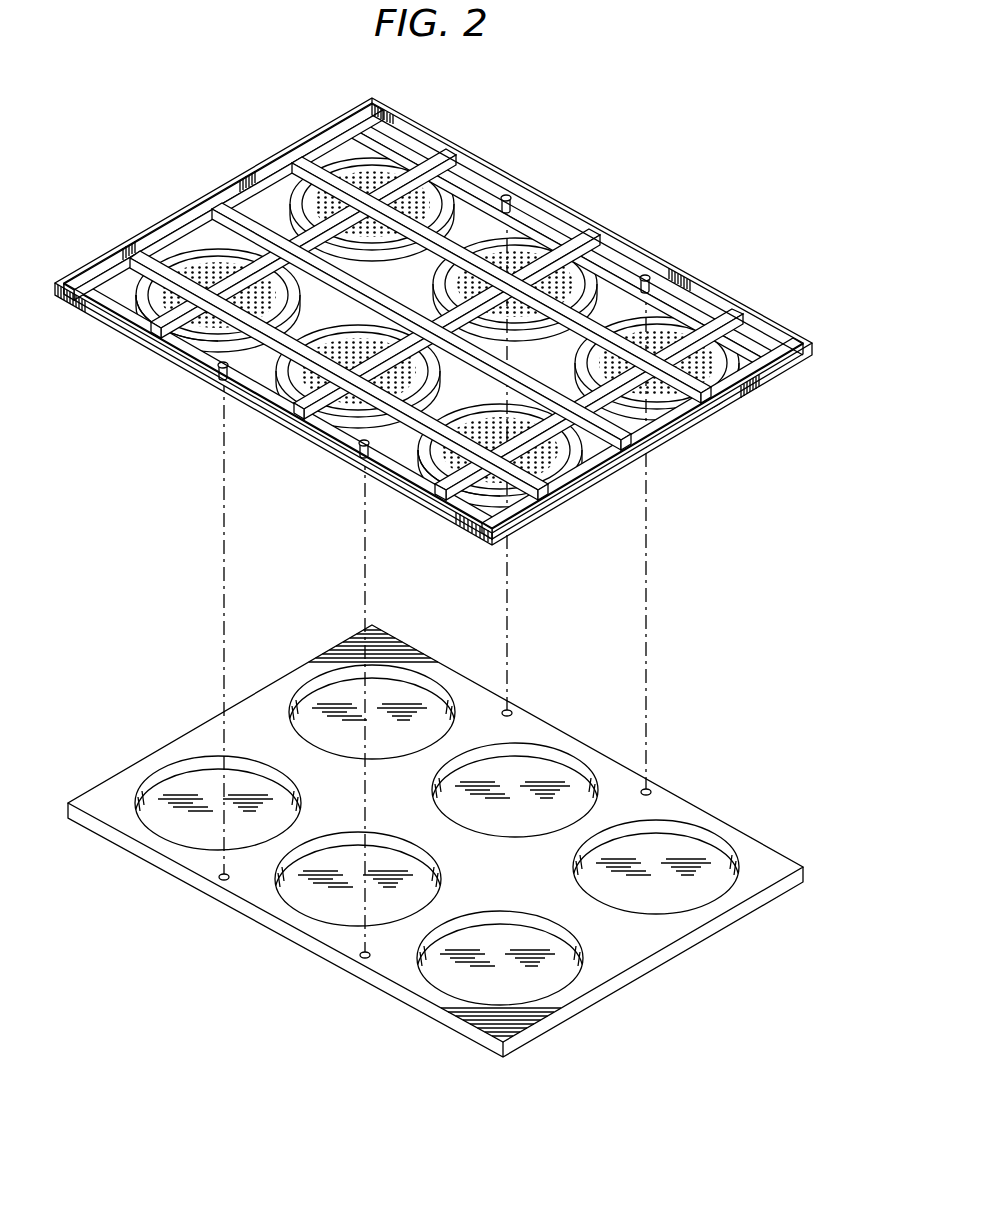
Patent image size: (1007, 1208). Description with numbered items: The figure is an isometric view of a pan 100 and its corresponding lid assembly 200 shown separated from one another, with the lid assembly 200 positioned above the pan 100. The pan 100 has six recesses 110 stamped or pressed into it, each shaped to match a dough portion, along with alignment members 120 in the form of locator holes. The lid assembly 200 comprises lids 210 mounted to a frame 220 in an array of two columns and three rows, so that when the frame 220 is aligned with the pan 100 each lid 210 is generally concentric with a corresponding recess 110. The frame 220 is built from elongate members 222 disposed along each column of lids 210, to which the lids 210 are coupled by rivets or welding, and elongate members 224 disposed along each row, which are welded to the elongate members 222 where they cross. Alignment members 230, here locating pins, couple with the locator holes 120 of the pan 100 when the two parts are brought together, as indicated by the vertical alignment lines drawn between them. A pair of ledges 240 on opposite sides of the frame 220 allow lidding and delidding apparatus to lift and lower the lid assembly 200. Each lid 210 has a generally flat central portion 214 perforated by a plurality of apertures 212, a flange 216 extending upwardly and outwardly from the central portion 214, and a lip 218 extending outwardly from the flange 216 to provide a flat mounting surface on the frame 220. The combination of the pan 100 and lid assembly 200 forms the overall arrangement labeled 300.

The pan 100 is at (435, 841).
The recesses 110 is at (388, 733).
The alignment members 120 is at (512, 709).
The lid assembly 200 is at (433, 308).
The lids 210 is at (433, 313).
The apertures 212 is at (212, 265).
The central portion 214 is at (207, 322).
The flange 216 is at (287, 289).
The lip 218 is at (125, 300).
The frame 220 is at (396, 105).
The elongate members 222 is at (308, 152).
The elongate members 224 is at (441, 147).
The alignment members 230 is at (505, 193).
The ledges 240 is at (240, 172).
The assembly system 300 is at (120, 559).